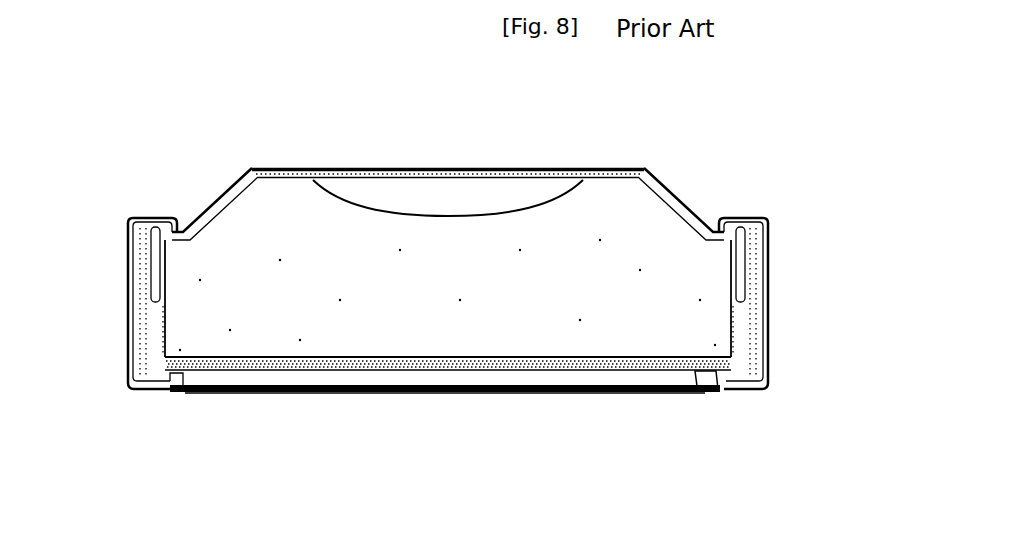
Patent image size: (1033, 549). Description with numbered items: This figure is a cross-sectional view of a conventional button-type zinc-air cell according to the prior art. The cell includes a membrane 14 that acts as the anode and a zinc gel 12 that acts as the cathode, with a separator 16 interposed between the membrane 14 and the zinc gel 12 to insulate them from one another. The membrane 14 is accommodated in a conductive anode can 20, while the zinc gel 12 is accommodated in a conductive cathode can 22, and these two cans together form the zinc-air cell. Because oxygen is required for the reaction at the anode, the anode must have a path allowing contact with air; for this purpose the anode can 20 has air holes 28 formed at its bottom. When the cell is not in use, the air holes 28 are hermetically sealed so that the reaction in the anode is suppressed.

The zinc gel 12 is at (292, 237).
The membrane 14 is at (693, 392).
The separator 16 is at (478, 343).
The anode can 20 is at (127, 232).
The cathode can 22 is at (528, 172).
The air holes 28 is at (323, 394).